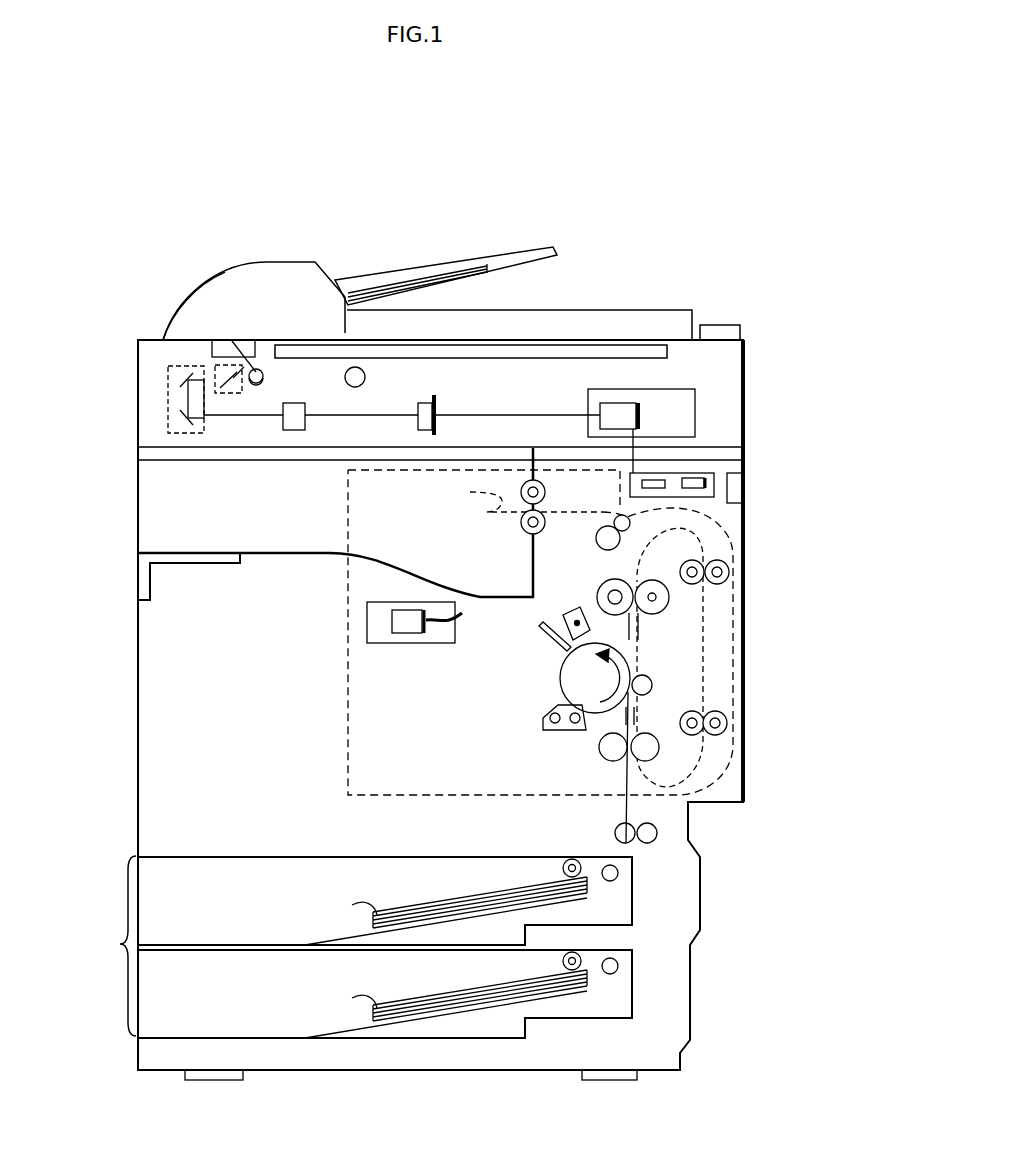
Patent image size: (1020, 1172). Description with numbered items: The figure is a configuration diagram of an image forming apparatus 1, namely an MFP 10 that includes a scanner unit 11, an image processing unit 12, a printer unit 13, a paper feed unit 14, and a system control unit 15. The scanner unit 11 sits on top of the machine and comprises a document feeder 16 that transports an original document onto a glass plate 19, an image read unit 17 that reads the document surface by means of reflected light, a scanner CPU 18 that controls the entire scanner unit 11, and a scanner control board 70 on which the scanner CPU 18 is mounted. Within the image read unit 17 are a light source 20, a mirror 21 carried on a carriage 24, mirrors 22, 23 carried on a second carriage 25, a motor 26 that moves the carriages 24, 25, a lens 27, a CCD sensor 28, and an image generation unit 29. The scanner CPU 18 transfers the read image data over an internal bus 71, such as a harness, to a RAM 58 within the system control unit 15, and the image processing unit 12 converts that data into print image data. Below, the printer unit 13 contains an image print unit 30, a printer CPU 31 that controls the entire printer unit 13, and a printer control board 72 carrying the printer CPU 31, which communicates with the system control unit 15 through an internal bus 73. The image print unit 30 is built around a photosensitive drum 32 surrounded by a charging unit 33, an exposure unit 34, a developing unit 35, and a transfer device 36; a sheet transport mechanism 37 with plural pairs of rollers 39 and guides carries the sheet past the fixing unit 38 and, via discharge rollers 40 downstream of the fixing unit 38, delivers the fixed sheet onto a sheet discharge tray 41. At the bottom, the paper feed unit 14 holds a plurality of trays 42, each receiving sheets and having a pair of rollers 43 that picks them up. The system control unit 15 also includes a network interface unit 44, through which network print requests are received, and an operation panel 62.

The image forming apparatus 1 is at (788, 553).
The MFP 10 is at (203, 203).
The scanner unit 11 is at (118, 292).
The image processing unit 12 is at (700, 472).
The printer unit 13 is at (348, 690).
The paper feed unit 14 is at (108, 946).
The system control unit 15 is at (673, 478).
The document feeder 16 is at (190, 297).
The image read unit 17 is at (746, 393).
The scanner CPU 18 is at (641, 415).
The glass plate 19 is at (327, 348).
The light source 20 is at (265, 376).
The mirror 21 is at (230, 393).
The mirror 22 is at (170, 378).
The mirror 23 is at (190, 420).
The carriage 24 is at (243, 383).
The carriage 25 is at (168, 418).
The motor 26 is at (367, 377).
The lens 27 is at (305, 422).
The CCD sensor 28 is at (420, 420).
The image generation unit 29 is at (436, 402).
The image print unit 30 is at (494, 704).
The printer CPU 31 is at (402, 634).
The photosensitive drum 32 is at (560, 672).
The charging unit 33 is at (572, 608).
The exposure unit 34 is at (540, 630).
The developing unit 35 is at (548, 730).
The transfer device 36 is at (653, 682).
The sheet transport mechanism 37 is at (618, 719).
The fixing unit 38 is at (670, 604).
The pairs of rollers 39 is at (603, 522).
The discharge rollers 40 is at (547, 518).
The sheet discharge tray 41 is at (465, 592).
The tray 42 is at (262, 856).
The pair of rollers 43 is at (565, 868).
The network interface unit 44 is at (747, 490).
The RAM 58 is at (663, 483).
The operation panel 62 is at (707, 322).
The scanner control board 70 is at (657, 392).
The internal bus 71 is at (547, 440).
The printer control board 72 is at (407, 602).
The internal bus 73 is at (460, 618).